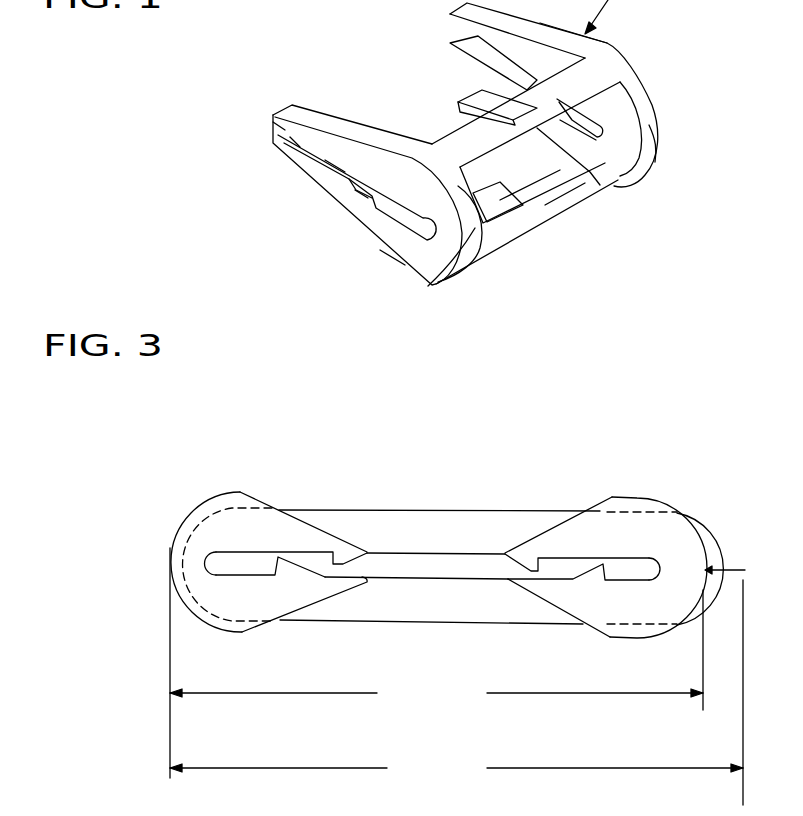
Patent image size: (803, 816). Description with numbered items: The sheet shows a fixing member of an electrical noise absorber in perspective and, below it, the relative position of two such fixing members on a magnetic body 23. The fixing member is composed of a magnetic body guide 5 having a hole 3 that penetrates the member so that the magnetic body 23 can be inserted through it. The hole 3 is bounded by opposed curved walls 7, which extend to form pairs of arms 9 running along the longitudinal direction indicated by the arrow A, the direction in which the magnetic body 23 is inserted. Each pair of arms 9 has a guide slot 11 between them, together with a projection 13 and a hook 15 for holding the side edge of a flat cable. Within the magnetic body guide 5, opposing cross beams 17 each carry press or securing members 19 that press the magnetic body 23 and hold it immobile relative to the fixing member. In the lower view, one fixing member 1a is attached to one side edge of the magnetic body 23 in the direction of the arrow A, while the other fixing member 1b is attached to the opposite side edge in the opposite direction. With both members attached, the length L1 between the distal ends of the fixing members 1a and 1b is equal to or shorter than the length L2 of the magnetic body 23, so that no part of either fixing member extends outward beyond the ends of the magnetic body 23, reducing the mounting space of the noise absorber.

In FIG. 1, the arrow A is at (397, 88).
In FIG. 1, the hole 3 is at (534, 176).
In FIG. 1, the magnetic body guide 5 is at (556, 162).
In FIG. 1, the curved walls 7 is at (649, 128).
In FIG. 1, the arms 9 is at (394, 252).
In FIG. 1, the guide slot 11 is at (333, 167).
In FIG. 1, the projection 13 is at (362, 196).
In FIG. 1, the hook 15 is at (272, 138).
In FIG. 1, the cross beams 17 is at (558, 104).
In FIG. 1, the press or securing members 19 is at (470, 100).
In FIG. 3, the fixing member 1a is at (647, 510).
In FIG. 3, the fixing member 1b is at (242, 500).
In FIG. 3, the magnetic body 23 is at (448, 525).
In FIG. 3, the length between distal ends of the fixing members L1 is at (436, 699).
In FIG. 3, the length of the magnetic body L2 is at (456, 774).